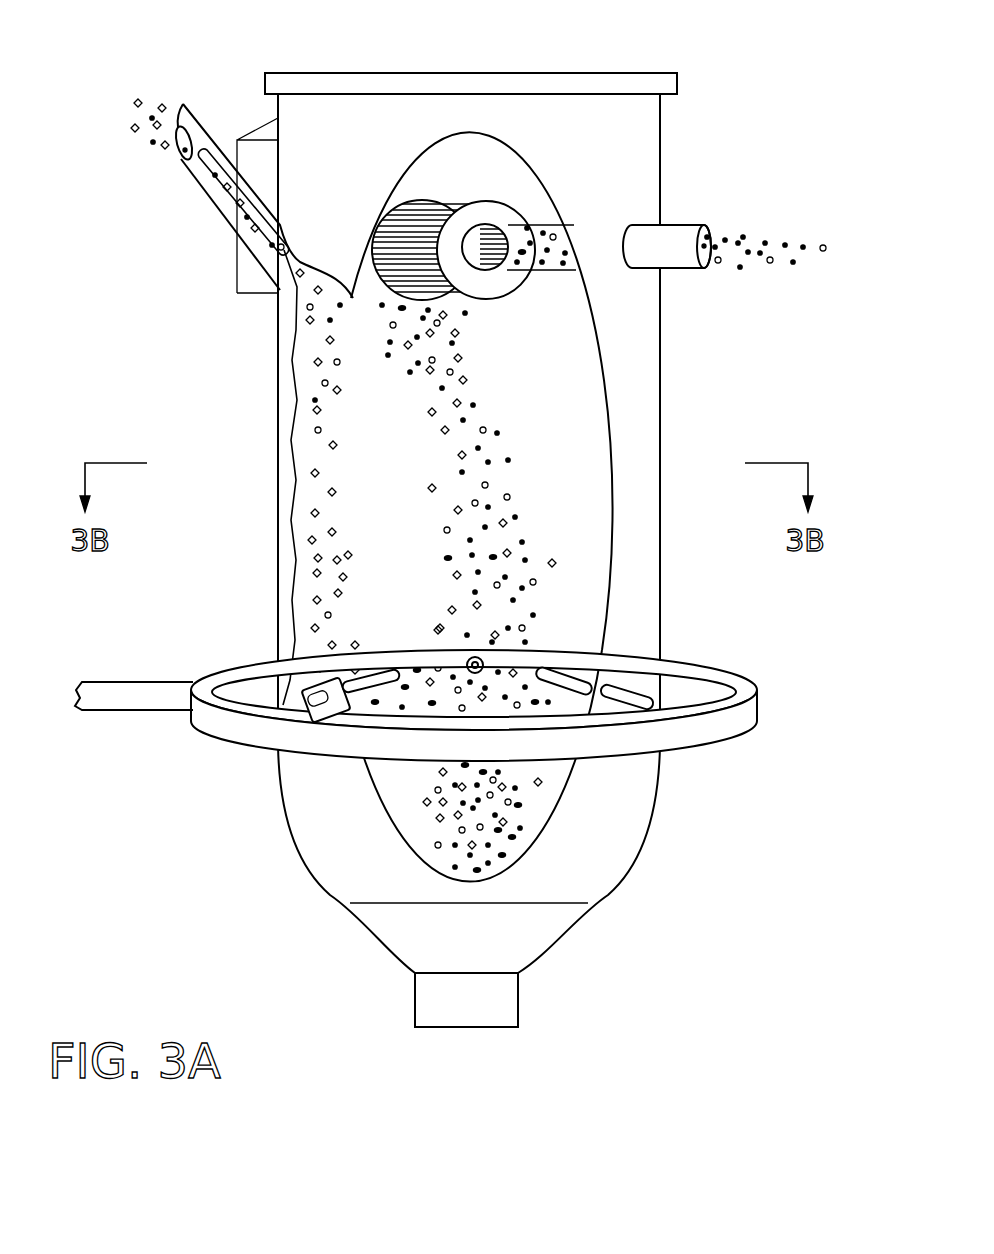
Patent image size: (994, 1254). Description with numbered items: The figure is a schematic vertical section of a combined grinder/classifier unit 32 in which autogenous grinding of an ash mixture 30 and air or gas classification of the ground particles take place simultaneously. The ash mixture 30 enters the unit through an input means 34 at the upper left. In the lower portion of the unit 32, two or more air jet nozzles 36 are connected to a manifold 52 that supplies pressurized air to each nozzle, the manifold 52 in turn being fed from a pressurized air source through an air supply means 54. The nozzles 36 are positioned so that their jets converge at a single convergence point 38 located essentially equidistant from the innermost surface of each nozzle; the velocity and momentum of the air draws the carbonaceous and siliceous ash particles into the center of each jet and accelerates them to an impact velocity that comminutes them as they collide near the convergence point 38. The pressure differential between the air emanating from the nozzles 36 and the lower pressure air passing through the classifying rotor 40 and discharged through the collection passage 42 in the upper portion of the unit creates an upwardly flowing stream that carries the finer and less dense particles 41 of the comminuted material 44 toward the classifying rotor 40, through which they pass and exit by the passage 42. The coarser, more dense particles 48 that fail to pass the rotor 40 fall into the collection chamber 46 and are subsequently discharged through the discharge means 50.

The ash mixture 30 is at (165, 148).
The combined grinder/classifier unit 32 is at (677, 163).
The input means 34 is at (207, 197).
The air jet nozzles 36 is at (447, 655).
The convergence point 38 is at (528, 628).
The classifying rotor 40 is at (477, 185).
The finer and less dense particles 41 is at (788, 244).
The collection passage 42 is at (680, 228).
The comminuted material 44 is at (510, 495).
The collection chamber 46 is at (560, 870).
The coarser, more dense particles 48 is at (513, 802).
The discharge means 50 is at (510, 1004).
The manifold 52 is at (772, 681).
The air supply means 54 is at (122, 685).